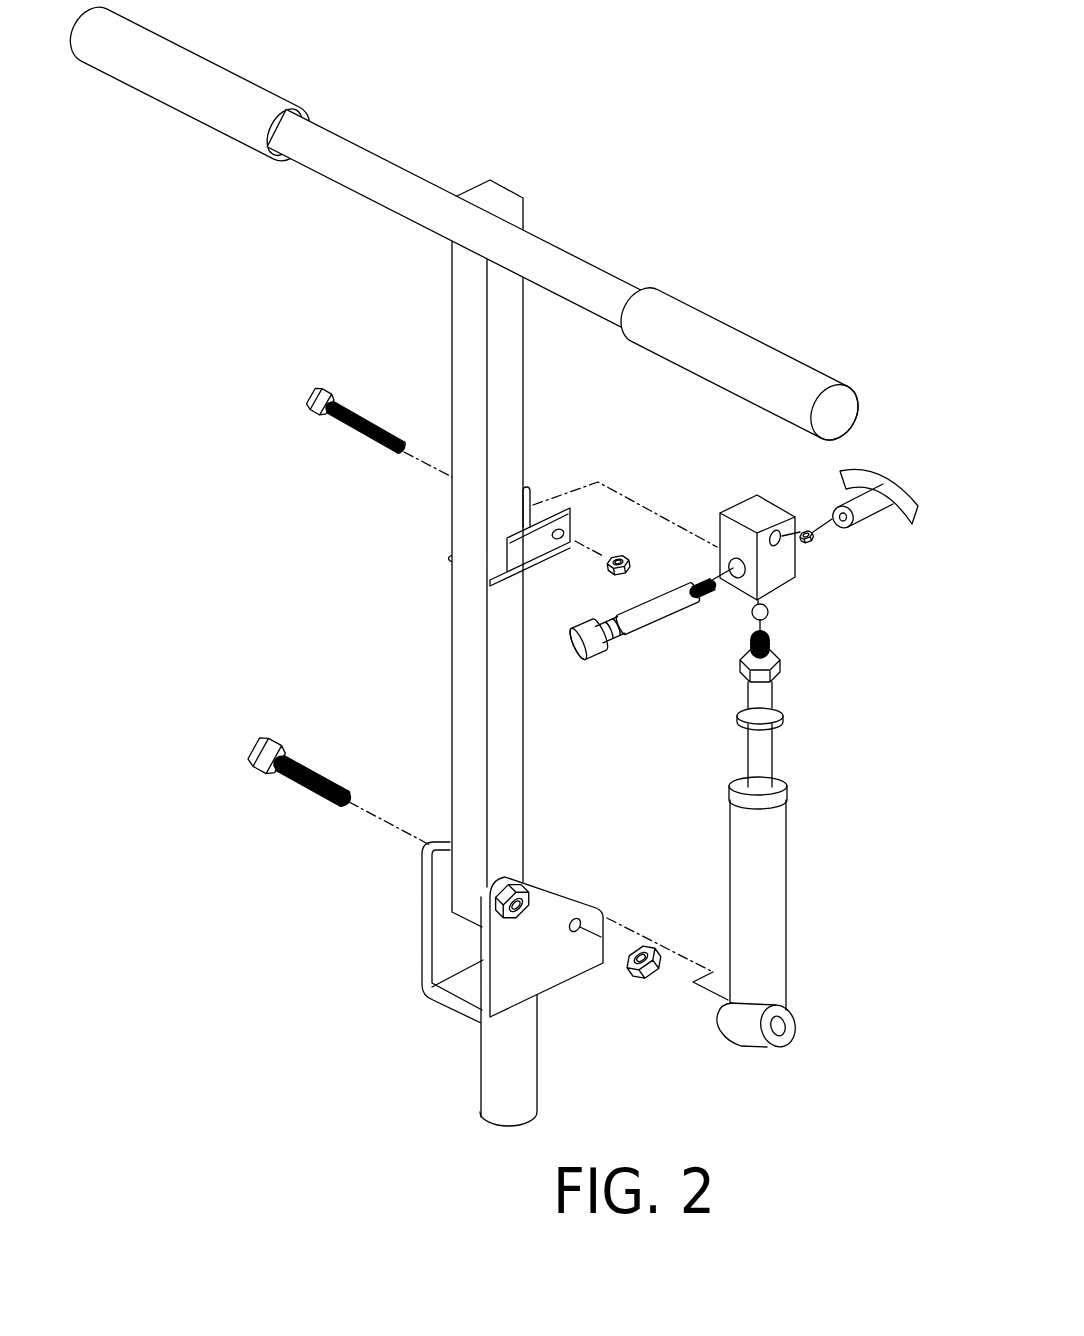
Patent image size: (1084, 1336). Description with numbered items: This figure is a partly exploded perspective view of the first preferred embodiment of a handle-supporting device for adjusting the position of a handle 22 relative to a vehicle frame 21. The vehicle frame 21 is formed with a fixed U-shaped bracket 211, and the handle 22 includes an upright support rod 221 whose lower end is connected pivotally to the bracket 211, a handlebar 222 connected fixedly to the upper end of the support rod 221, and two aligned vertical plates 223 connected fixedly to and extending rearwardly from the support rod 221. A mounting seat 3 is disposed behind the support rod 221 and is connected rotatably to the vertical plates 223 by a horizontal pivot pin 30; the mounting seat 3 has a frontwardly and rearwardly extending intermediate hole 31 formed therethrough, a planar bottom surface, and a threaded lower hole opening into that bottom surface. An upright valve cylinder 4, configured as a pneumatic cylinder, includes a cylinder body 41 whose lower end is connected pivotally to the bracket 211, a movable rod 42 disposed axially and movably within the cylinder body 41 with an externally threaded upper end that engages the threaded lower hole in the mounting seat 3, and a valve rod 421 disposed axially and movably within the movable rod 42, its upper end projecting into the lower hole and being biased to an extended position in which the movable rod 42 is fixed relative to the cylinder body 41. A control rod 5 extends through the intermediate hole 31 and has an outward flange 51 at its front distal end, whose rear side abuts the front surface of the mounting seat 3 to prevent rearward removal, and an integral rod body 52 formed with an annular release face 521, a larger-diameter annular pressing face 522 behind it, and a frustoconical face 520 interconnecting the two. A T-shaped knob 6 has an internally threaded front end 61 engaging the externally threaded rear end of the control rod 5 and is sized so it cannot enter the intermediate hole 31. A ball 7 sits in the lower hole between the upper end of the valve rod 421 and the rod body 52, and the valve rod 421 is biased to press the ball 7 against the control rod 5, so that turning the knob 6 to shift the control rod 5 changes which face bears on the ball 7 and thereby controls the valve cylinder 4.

The handle 22 is at (464, 463).
The upright support rod 221 is at (468, 331).
The handlebar 222 is at (350, 163).
The vertical plates 223 is at (533, 495).
The horizontal pivot pin 30 is at (337, 427).
The vehicle frame 21 is at (528, 984).
The U-shaped bracket 211 is at (438, 920).
The mounting seat 3 is at (799, 547).
The intermediate hole 31 is at (735, 573).
The T-shaped knob 6 is at (885, 508).
The internally threaded front end 61 is at (857, 523).
The ball 7 is at (770, 613).
The upright valve cylinder 4 is at (796, 840).
The cylinder body 41 is at (763, 903).
The movable rod 42 is at (760, 690).
The valve rod 421 is at (773, 641).
The control rod 5 is at (633, 628).
The outward flange 51 is at (589, 639).
The rod body 52 is at (703, 588).
The frustoconical face 520 is at (617, 626).
The annular release face 521 is at (610, 630).
The annular pressing face 522 is at (657, 609).